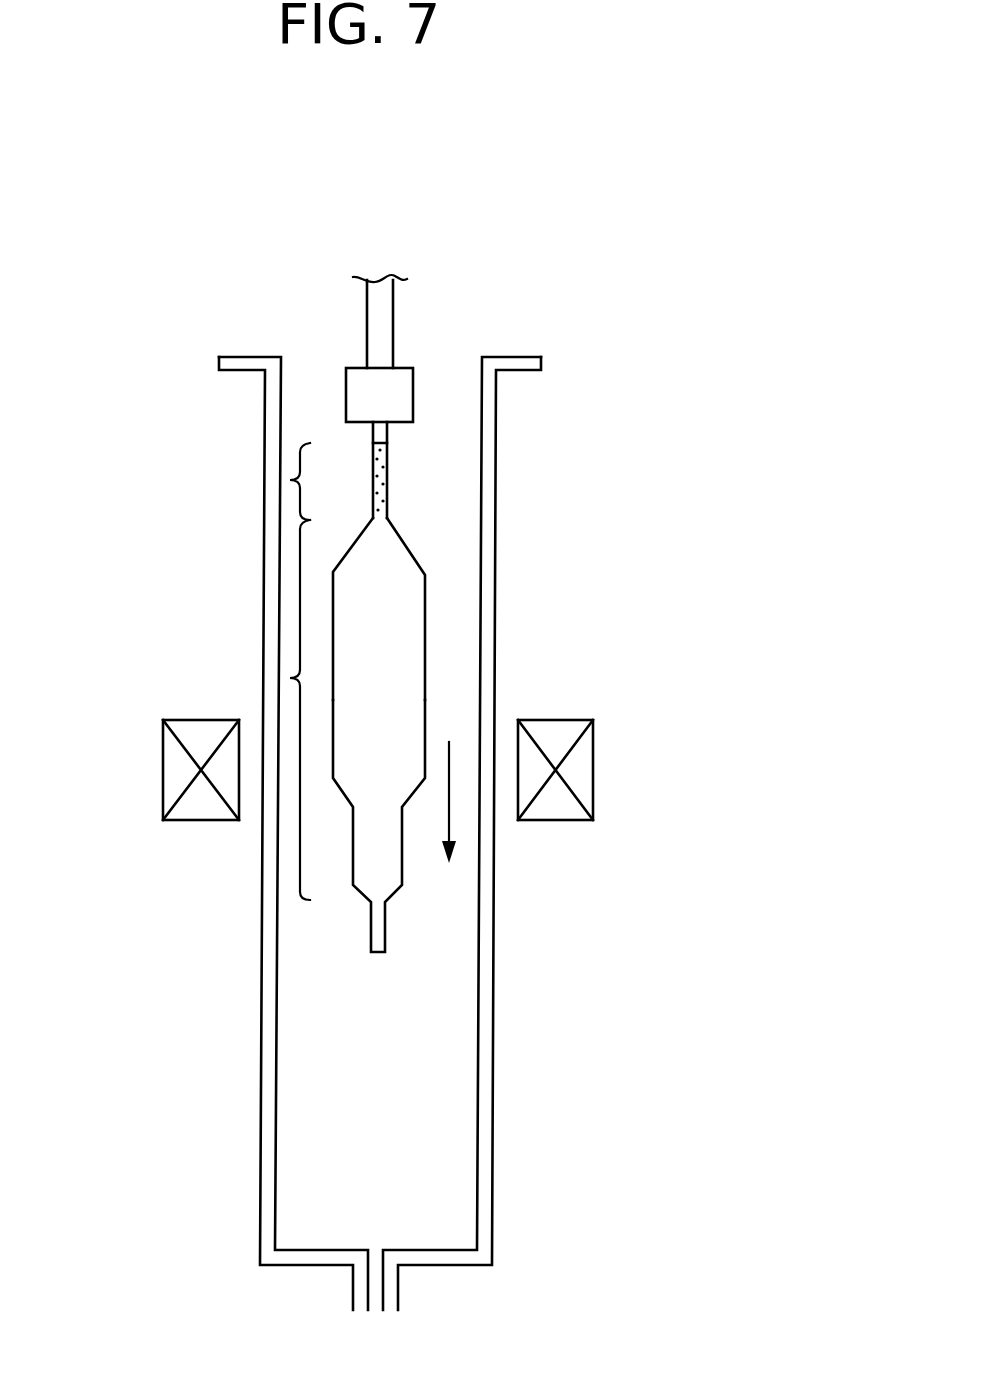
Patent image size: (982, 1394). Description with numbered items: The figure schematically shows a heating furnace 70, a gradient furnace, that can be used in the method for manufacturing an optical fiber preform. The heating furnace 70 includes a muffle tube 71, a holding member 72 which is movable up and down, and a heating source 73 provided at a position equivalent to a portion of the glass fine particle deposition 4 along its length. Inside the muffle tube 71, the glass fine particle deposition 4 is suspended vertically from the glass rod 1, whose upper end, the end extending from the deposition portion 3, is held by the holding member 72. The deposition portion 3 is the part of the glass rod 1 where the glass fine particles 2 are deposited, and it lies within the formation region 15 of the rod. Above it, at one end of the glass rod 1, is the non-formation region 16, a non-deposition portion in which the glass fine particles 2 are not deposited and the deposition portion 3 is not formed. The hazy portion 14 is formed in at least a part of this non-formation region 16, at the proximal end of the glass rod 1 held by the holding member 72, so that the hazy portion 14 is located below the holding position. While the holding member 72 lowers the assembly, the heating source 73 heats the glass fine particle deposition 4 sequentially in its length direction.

The glass rod 1 is at (414, 443).
The glass fine particles 2 is at (444, 801).
The deposition portion 3 is at (444, 609).
The glass fine particle deposition 4 is at (444, 735).
The hazy portion 14 is at (423, 481).
The formation region 15 is at (251, 710).
The non-formation region 16 is at (251, 479).
The heating furnace 70 is at (376, 788).
The muffle tube 71 is at (407, 833).
The holding member 72 is at (351, 353).
The heating source 73 is at (376, 770).